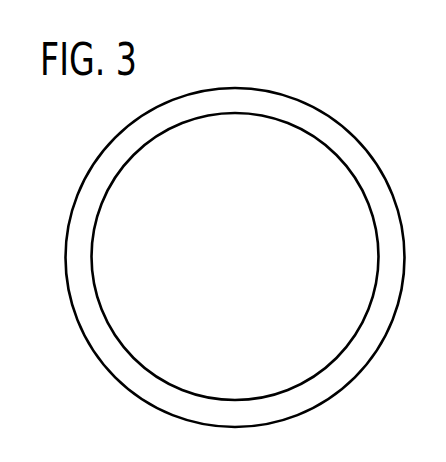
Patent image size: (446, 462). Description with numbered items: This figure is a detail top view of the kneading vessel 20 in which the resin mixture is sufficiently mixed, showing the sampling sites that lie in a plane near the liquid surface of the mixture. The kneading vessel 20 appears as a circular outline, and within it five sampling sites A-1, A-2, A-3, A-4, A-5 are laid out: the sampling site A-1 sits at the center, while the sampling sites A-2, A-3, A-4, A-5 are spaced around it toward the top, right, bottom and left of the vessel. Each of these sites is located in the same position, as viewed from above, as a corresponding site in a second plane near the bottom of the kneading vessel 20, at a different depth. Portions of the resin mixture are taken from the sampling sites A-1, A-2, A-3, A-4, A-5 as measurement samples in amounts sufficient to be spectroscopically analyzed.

The kneading vessel 20 is at (416, 104).
The sampling site A-1 is at (235, 260).
The sampling site A-2 is at (235, 137).
The sampling site A-3 is at (347, 260).
The sampling site A-4 is at (235, 374).
The sampling site A-5 is at (122, 260).